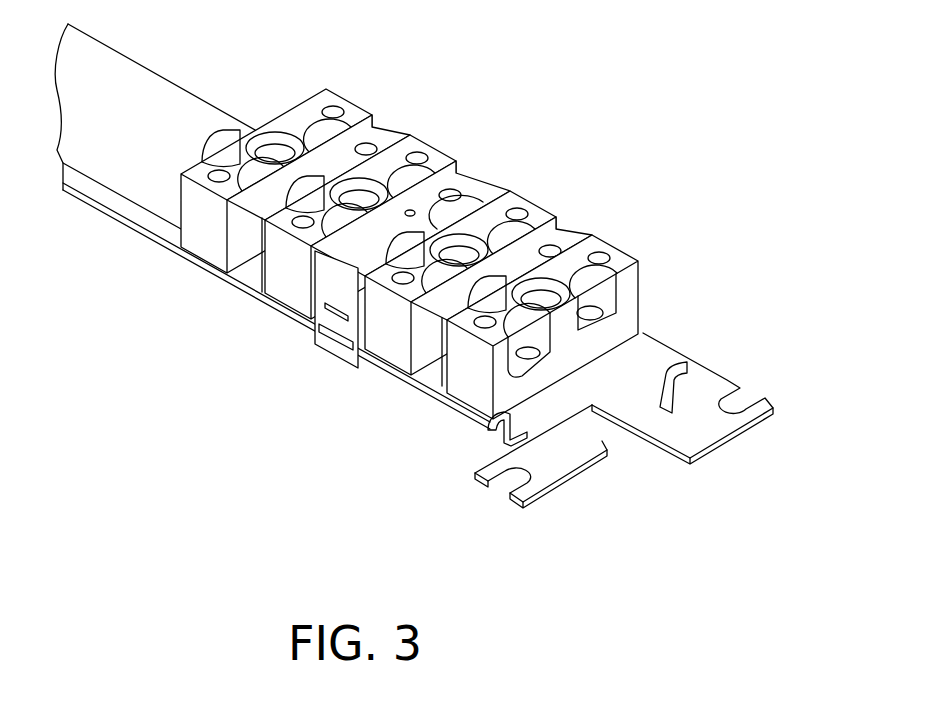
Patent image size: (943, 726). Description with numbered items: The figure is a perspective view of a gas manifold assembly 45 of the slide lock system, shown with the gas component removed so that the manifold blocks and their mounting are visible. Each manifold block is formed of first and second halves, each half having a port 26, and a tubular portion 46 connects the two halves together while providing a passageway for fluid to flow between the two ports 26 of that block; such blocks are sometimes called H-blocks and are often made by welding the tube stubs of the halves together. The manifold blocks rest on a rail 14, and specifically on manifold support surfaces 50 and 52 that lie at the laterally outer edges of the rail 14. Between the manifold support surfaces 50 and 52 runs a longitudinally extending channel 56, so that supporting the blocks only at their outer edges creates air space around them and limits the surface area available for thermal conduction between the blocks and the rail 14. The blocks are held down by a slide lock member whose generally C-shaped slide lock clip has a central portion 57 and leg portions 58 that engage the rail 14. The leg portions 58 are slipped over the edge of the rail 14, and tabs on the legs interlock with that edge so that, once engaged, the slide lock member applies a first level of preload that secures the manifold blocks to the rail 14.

The rail 14 is at (133, 172).
The port 26 is at (355, 195).
The gas manifold assembly 45 is at (572, 142).
The tubular portion 46 is at (290, 191).
The manifold support surface 50 is at (698, 378).
The manifold support surface 52 is at (487, 427).
The channel 56 is at (570, 396).
The central portion 57 is at (418, 205).
The leg portions 58 is at (338, 338).